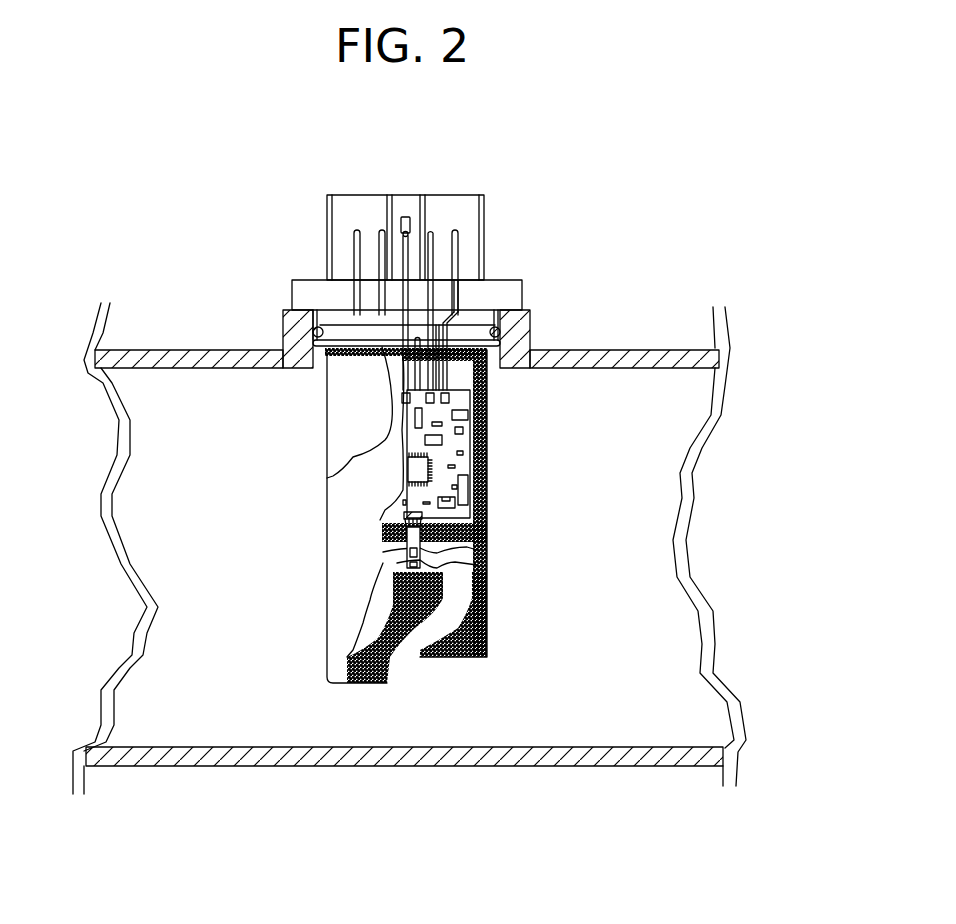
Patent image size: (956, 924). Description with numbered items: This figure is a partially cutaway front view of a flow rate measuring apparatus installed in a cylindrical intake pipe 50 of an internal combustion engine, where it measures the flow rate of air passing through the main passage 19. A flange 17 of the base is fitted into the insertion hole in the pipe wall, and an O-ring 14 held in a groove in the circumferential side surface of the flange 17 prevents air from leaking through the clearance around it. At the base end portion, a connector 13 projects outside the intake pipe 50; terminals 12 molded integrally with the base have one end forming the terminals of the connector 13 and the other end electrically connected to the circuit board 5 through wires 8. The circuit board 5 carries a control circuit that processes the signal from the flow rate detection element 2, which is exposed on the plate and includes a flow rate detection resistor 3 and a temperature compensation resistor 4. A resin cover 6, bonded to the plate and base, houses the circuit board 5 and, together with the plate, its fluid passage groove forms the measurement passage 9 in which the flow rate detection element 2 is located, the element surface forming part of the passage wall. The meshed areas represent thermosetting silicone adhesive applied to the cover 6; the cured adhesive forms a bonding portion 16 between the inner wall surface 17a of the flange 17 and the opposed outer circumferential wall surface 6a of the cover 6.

The flow rate detection element 2 is at (383, 552).
The flow rate detection resistor 3 is at (487, 538).
The temperature compensation resistor 4 is at (487, 567).
The circuit board 5 is at (452, 440).
The cover 6 is at (357, 520).
The outer circumferential wall surface 6a is at (350, 345).
The wires 8 is at (453, 392).
The measurement passage 9 is at (458, 585).
The terminals 12 is at (440, 366).
The connector 13 is at (463, 212).
The O-ring 14 is at (507, 340).
The bonding portion 16 is at (465, 340).
The flange 17 is at (503, 296).
The inner wall surface 17a is at (358, 463).
The main passage 19 is at (506, 730).
The intake pipe 50 is at (232, 360).